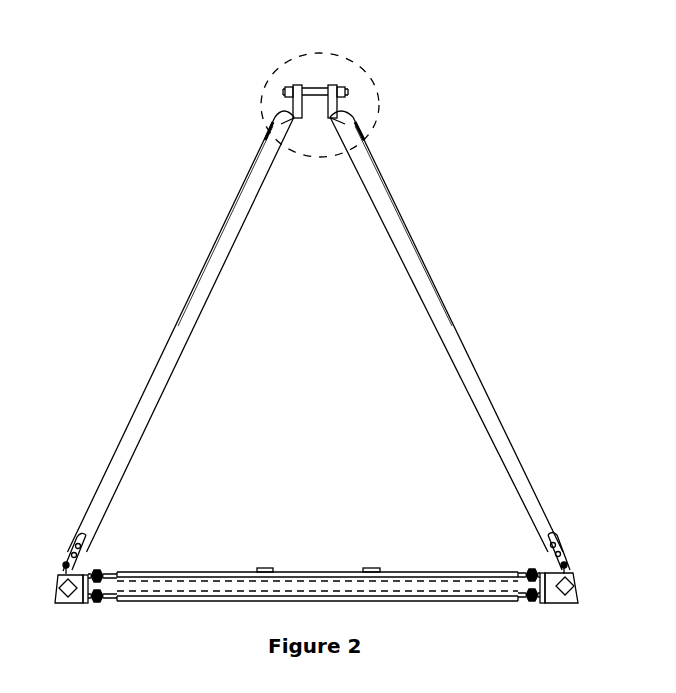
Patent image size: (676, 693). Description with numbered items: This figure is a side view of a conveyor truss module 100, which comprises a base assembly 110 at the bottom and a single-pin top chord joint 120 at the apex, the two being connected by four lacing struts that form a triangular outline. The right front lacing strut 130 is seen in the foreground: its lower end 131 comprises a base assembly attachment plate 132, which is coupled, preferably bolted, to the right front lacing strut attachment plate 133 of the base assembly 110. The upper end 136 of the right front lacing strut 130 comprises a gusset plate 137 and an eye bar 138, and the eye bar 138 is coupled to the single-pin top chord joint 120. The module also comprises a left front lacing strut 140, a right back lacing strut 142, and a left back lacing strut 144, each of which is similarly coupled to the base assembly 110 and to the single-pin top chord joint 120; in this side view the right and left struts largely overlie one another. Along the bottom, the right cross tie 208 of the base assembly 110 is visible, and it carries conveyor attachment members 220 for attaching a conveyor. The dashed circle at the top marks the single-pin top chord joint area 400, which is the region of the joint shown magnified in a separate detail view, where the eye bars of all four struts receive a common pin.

The conveyor truss module 100 is at (222, 130).
The base assembly 110 is at (158, 605).
The single-pin top chord joint 120 is at (287, 75).
The right front lacing strut 130 is at (156, 363).
The lower end 131 is at (67, 538).
The base assembly attachment plate 132 is at (85, 542).
The right front lacing strut attachment plate 133 is at (77, 570).
The upper end 136 is at (281, 158).
The gusset plate 137 is at (292, 132).
The eye bar 138 is at (305, 108).
The left front lacing strut 140 is at (247, 175).
The right back lacing strut 142 is at (482, 375).
The left back lacing strut 144 is at (387, 168).
The right cross tie 208 is at (182, 572).
The conveyor attachment members 220 is at (373, 568).
The single-pin top chord joint area 400 is at (373, 73).